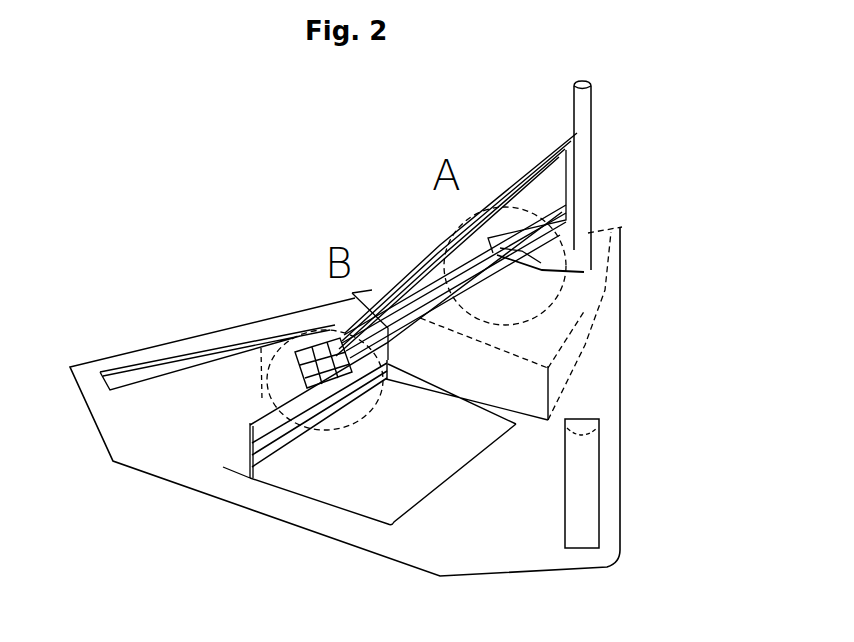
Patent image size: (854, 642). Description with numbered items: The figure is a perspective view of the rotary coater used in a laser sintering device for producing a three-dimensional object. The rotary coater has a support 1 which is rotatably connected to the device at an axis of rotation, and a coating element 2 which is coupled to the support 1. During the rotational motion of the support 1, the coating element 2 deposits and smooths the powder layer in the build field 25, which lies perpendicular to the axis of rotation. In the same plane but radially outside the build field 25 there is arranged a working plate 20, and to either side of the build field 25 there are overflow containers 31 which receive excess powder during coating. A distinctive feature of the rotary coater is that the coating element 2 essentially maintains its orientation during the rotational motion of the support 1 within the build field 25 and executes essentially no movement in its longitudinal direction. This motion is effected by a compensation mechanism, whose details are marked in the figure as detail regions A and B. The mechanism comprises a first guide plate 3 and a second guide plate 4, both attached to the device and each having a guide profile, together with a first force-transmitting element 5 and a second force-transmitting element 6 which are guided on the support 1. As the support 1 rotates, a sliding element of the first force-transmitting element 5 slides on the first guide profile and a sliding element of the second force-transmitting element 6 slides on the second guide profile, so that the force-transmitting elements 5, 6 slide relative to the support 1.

The support 1 is at (534, 168).
The coating element 2 is at (230, 473).
The first guide plate 3 is at (585, 272).
The second guide plate 4 is at (620, 227).
The first force-transmitting element 5 is at (340, 340).
The second force-transmitting element 6 is at (440, 307).
The working plate 20 is at (510, 548).
The build field 25 is at (310, 470).
The overflow container 31 is at (142, 390).